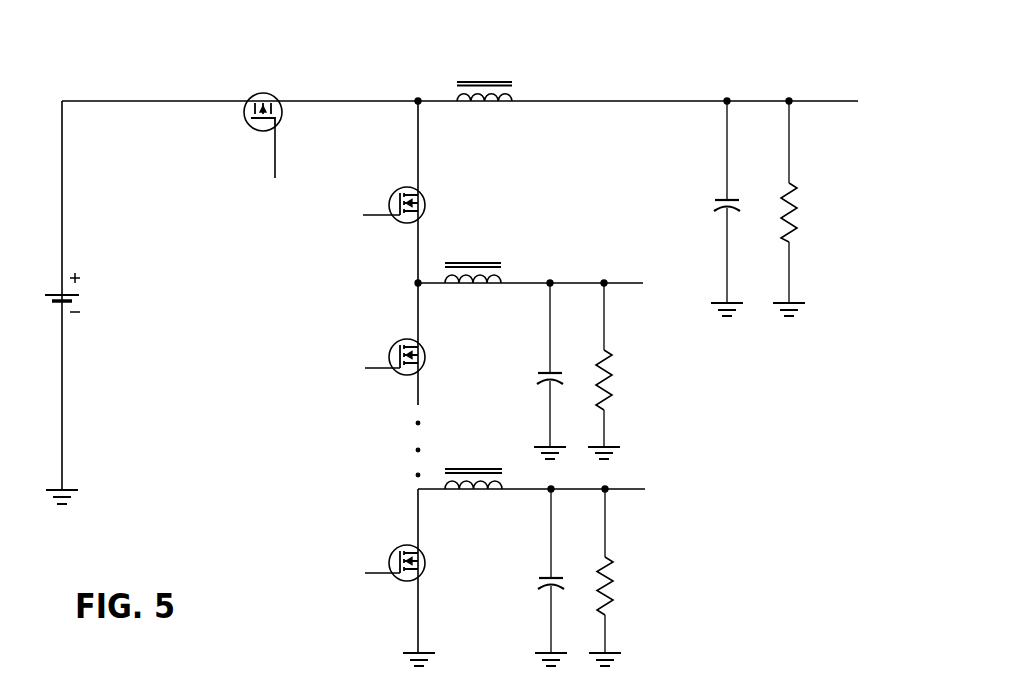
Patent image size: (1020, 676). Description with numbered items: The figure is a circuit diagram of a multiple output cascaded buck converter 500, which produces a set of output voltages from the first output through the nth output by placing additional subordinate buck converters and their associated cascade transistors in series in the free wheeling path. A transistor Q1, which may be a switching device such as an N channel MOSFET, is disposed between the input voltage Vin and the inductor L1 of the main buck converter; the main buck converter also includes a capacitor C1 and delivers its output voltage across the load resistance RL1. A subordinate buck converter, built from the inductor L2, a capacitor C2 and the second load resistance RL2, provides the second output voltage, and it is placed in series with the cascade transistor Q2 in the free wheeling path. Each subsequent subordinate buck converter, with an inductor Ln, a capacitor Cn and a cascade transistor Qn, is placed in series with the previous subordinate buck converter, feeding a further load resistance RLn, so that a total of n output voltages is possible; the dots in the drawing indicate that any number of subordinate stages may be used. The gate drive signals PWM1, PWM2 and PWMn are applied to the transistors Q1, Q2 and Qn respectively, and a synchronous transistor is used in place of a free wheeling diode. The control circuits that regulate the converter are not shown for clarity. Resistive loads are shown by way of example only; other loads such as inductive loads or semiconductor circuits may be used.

The multiple output cascaded buck converter 500 is at (738, 70).
The input voltage Vin is at (83, 292).
The transistor Q1 is at (263, 96).
The PWM control signal for Q1 PWM1 is at (240, 151).
The inductor L1 is at (484, 108).
The second switch transistor Q2 is at (425, 205).
The PWM control signal for Q2 PWM2 is at (346, 216).
The second output inductor L2 is at (473, 292).
The cascade transistor Qn is at (424, 355).
The PWM control signal for Qn PWMn is at (346, 366).
The inductor Ln is at (473, 498).
The capacitor C1 is at (709, 207).
The load resistance RL1 is at (809, 207).
The second output capacitor C2 is at (535, 369).
The second load resistance RL2 is at (627, 369).
The capacitor Cn is at (535, 576).
The nth load resistor RLn is at (628, 576).